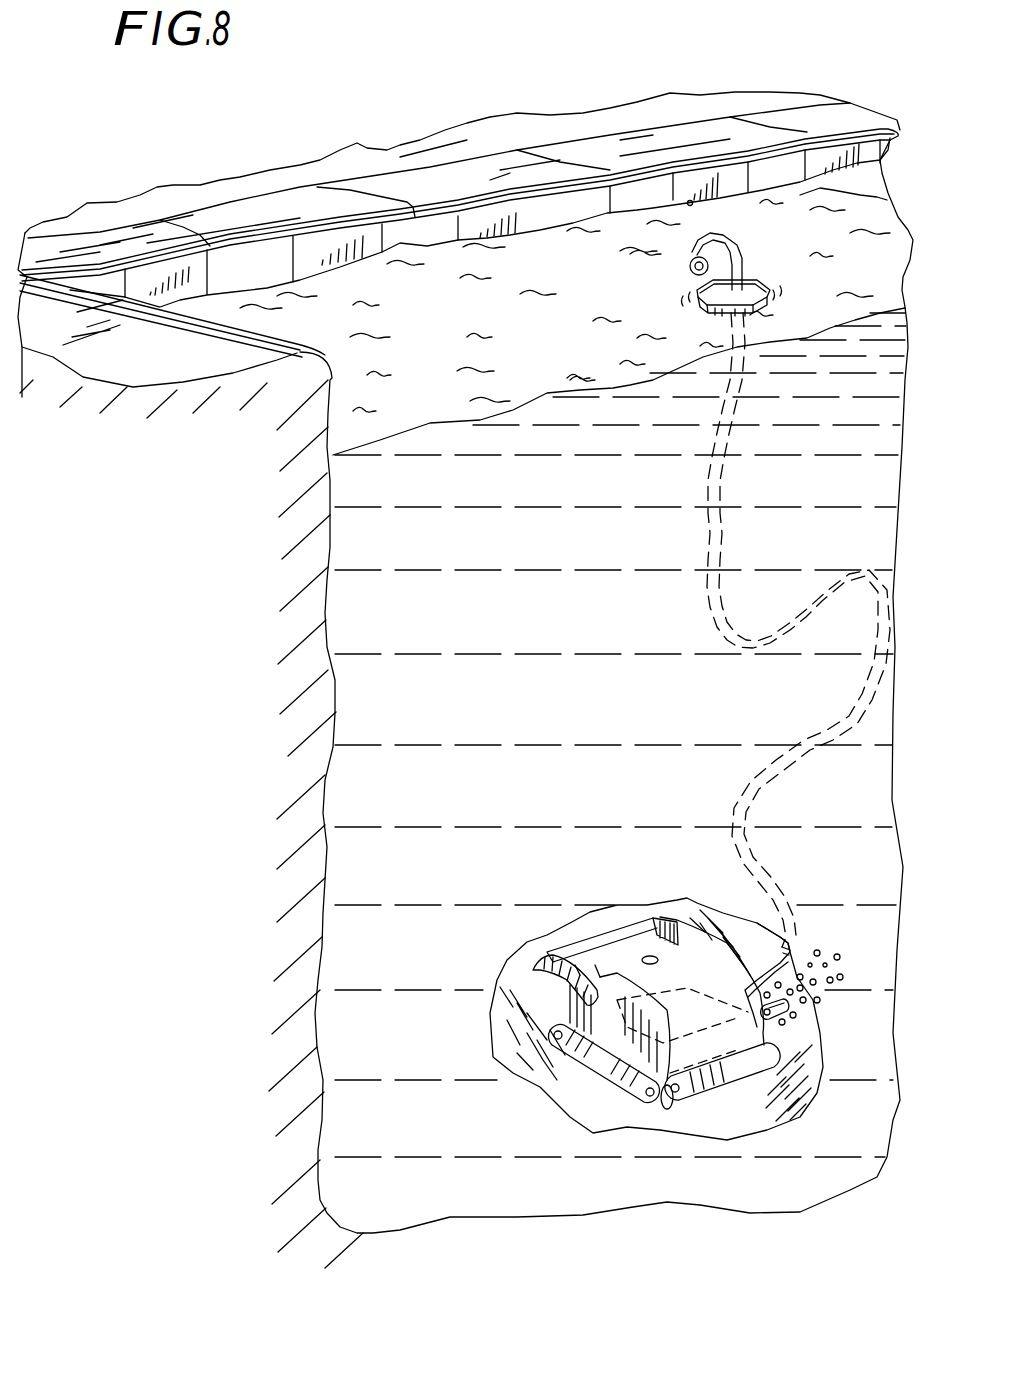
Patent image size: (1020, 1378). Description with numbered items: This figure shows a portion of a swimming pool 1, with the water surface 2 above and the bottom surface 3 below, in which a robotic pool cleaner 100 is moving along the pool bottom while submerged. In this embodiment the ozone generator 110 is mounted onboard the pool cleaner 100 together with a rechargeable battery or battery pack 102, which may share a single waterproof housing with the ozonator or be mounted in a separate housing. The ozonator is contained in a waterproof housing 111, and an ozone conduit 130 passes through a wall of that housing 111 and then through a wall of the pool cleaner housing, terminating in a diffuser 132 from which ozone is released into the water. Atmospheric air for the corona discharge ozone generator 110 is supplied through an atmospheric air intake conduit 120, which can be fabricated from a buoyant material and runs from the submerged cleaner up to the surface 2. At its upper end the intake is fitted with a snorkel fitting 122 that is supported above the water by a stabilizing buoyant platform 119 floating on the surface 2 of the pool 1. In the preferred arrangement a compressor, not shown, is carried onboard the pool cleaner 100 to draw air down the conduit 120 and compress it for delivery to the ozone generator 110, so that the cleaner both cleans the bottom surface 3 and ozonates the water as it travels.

The swimming pool 1 is at (262, 405).
The surface of the pool 2 is at (292, 340).
The bottom surface of the pool 3 is at (810, 1060).
The robotic pool cleaner 100 is at (500, 980).
The rechargeable battery 102 is at (500, 1053).
The ozone generator 110 is at (805, 937).
The waterproof housing 111 is at (702, 898).
The stabilizing buoyant platform 119 is at (753, 280).
The atmospheric air intake conduit 120 is at (730, 245).
The snorkel fitting 122 is at (690, 268).
The ozone conduit 130 is at (747, 1057).
The diffuser 132 is at (800, 943).